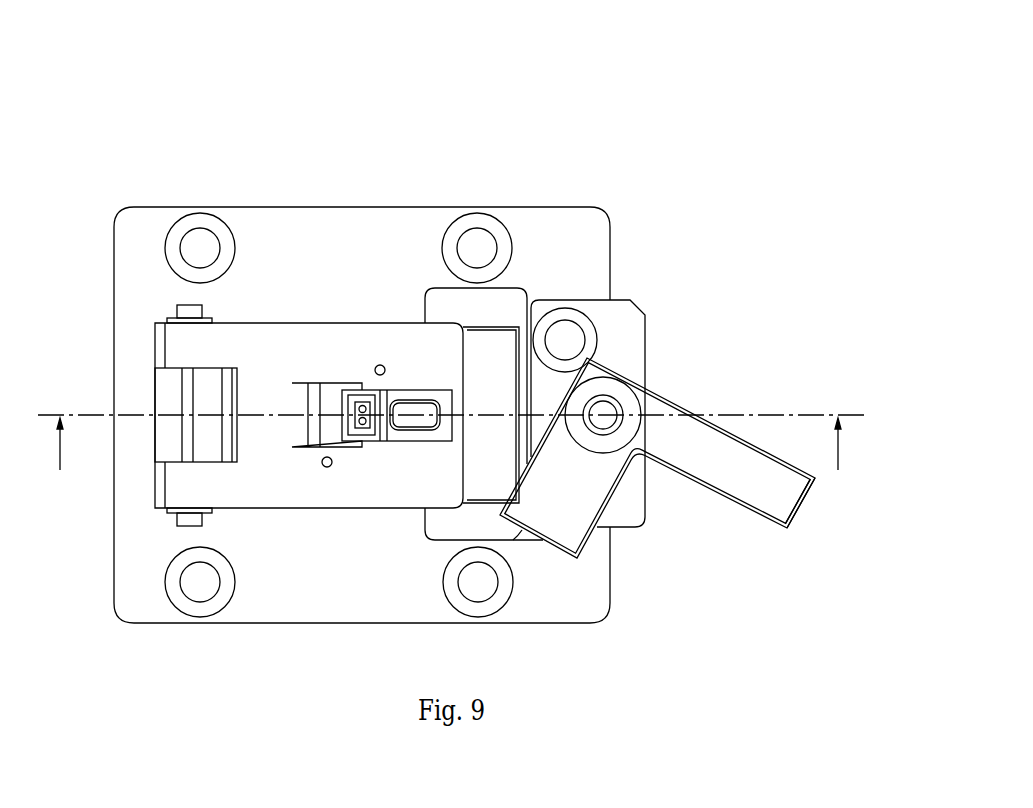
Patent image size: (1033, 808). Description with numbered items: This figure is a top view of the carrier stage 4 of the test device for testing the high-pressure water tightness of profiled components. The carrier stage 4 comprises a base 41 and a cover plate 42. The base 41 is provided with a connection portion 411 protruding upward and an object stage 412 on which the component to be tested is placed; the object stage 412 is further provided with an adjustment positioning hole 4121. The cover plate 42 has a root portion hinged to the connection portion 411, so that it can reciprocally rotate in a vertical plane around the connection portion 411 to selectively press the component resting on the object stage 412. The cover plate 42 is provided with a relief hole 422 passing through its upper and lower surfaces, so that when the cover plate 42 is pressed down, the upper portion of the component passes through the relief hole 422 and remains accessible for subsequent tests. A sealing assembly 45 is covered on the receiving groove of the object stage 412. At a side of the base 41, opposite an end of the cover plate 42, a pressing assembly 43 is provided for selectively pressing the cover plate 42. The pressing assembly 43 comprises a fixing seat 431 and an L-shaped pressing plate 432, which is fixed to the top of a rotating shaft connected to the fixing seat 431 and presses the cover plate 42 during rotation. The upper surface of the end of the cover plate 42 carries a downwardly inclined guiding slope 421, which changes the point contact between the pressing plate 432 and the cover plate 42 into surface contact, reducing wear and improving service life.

The carrier stage 4 is at (555, 127).
The base 41 is at (127, 222).
The connection portion 411 is at (162, 442).
The object stage 412 is at (513, 538).
The adjustment positioning hole 4121 is at (413, 423).
The cover plate 42 is at (170, 345).
The guiding slope 421 is at (475, 332).
The relief hole 422 is at (302, 385).
The pressing assembly 43 is at (718, 375).
The fixing seat 431 is at (633, 510).
The pressing plate 432 is at (797, 496).
The sealing assembly 45 is at (327, 433).